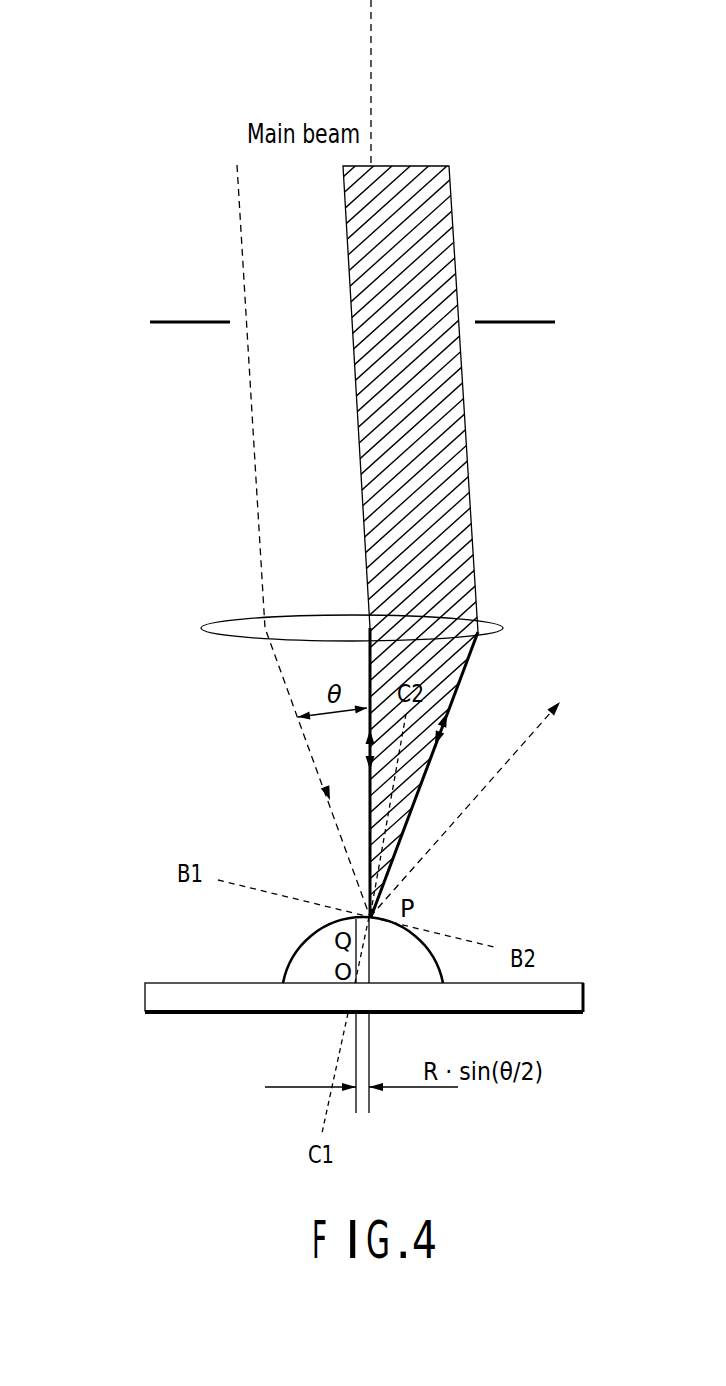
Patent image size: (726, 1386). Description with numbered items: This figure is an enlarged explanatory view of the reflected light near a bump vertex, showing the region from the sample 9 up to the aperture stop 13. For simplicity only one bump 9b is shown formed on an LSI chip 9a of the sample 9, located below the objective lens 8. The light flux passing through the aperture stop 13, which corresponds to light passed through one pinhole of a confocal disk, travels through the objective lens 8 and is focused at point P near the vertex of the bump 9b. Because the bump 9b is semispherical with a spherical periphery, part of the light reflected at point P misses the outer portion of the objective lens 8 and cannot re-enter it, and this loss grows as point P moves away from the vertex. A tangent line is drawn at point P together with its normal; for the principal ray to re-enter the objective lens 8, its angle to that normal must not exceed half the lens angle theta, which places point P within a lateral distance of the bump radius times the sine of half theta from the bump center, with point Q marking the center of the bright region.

The objective lens 8 is at (218, 637).
The sample 9 is at (315, 967).
The LSI chip 9a is at (166, 998).
The bump 9b is at (302, 953).
The aperture stop 13 is at (180, 325).